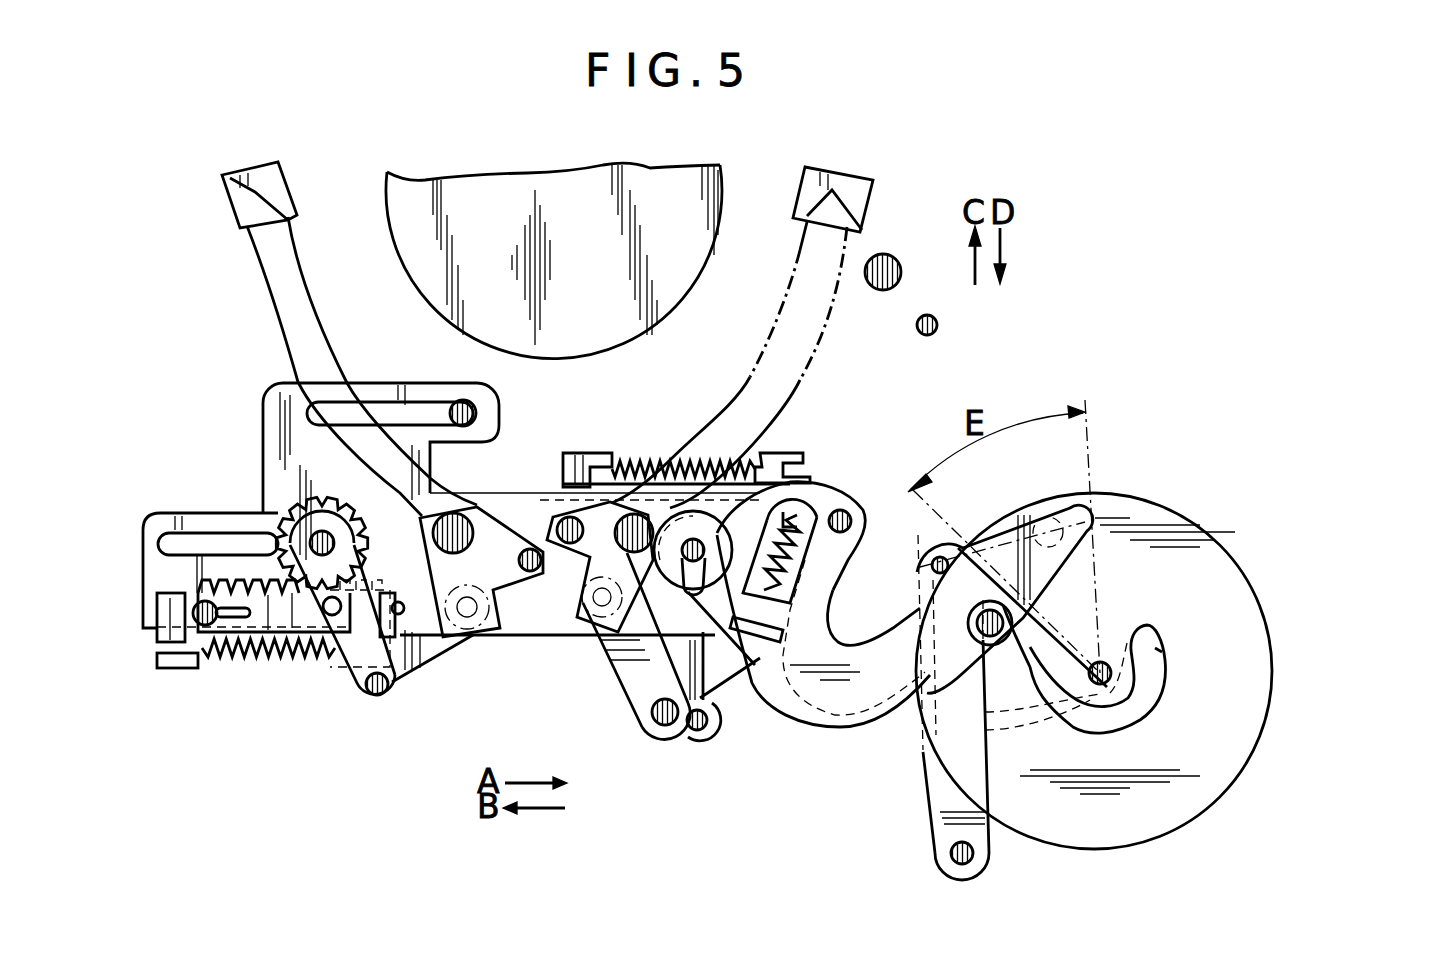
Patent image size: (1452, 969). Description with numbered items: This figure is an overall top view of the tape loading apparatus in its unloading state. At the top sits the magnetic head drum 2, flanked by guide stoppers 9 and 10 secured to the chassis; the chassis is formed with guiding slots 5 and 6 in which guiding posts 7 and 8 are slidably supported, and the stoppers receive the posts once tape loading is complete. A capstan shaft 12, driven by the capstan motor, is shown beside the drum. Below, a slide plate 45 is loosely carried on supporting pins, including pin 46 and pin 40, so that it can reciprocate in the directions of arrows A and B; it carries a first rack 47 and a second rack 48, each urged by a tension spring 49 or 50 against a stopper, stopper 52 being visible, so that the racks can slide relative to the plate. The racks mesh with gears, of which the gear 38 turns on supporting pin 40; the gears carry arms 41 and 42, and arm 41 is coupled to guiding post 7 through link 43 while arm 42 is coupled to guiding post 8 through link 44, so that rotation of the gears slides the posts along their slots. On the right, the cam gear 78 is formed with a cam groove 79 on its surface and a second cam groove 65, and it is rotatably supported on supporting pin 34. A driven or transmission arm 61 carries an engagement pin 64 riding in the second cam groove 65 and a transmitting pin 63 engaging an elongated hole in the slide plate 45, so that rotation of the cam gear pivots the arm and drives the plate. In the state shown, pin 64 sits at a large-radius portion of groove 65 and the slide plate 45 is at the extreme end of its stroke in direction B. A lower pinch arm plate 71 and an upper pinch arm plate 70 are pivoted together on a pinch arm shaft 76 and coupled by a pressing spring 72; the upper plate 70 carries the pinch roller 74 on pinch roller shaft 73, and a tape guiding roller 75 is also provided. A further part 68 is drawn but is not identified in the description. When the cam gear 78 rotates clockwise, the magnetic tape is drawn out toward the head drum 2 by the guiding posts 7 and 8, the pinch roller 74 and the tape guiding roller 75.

The magnetic head drum 2 is at (482, 175).
The guiding slot 5 is at (810, 356).
The guiding slot 6 is at (272, 282).
The guiding post 7 is at (573, 643).
The guiding post 8 is at (497, 637).
The guide stopper 9 is at (870, 178).
The guide stopper 10 is at (225, 178).
The capstan shaft 12 is at (938, 328).
The supporting pin 34 is at (1158, 690).
The gear 38 is at (312, 538).
The supporting pin 40 is at (312, 540).
The arm 41 is at (685, 740).
The arm 42 is at (340, 678).
The link 43 is at (630, 680).
The link 44 is at (467, 642).
The slide plate 45 is at (538, 640).
The supporting pin 46 is at (476, 414).
The first rack 47 is at (653, 463).
The second rack 48 is at (277, 655).
The tension spring 49 is at (637, 453).
The tension spring 50 is at (227, 655).
The stopper 52 is at (395, 596).
The driven arm 61 is at (925, 792).
The transmitting pin 63 is at (922, 556).
The engagement pin 64 is at (900, 630).
The second cam groove 65 is at (1017, 735).
The pin 68 is at (898, 262).
The upper pinch arm plate 70 is at (790, 727).
The lower pinch arm plate 71 is at (850, 728).
The pressing spring 72 is at (742, 688).
The pinch roller shaft 73 is at (688, 592).
The pinch roller 74 is at (770, 478).
The tape guiding roller 75 is at (845, 508).
The pinch arm shaft 76 is at (928, 601).
The cam gear 78 is at (1262, 666).
The cam groove 79 is at (1162, 652).